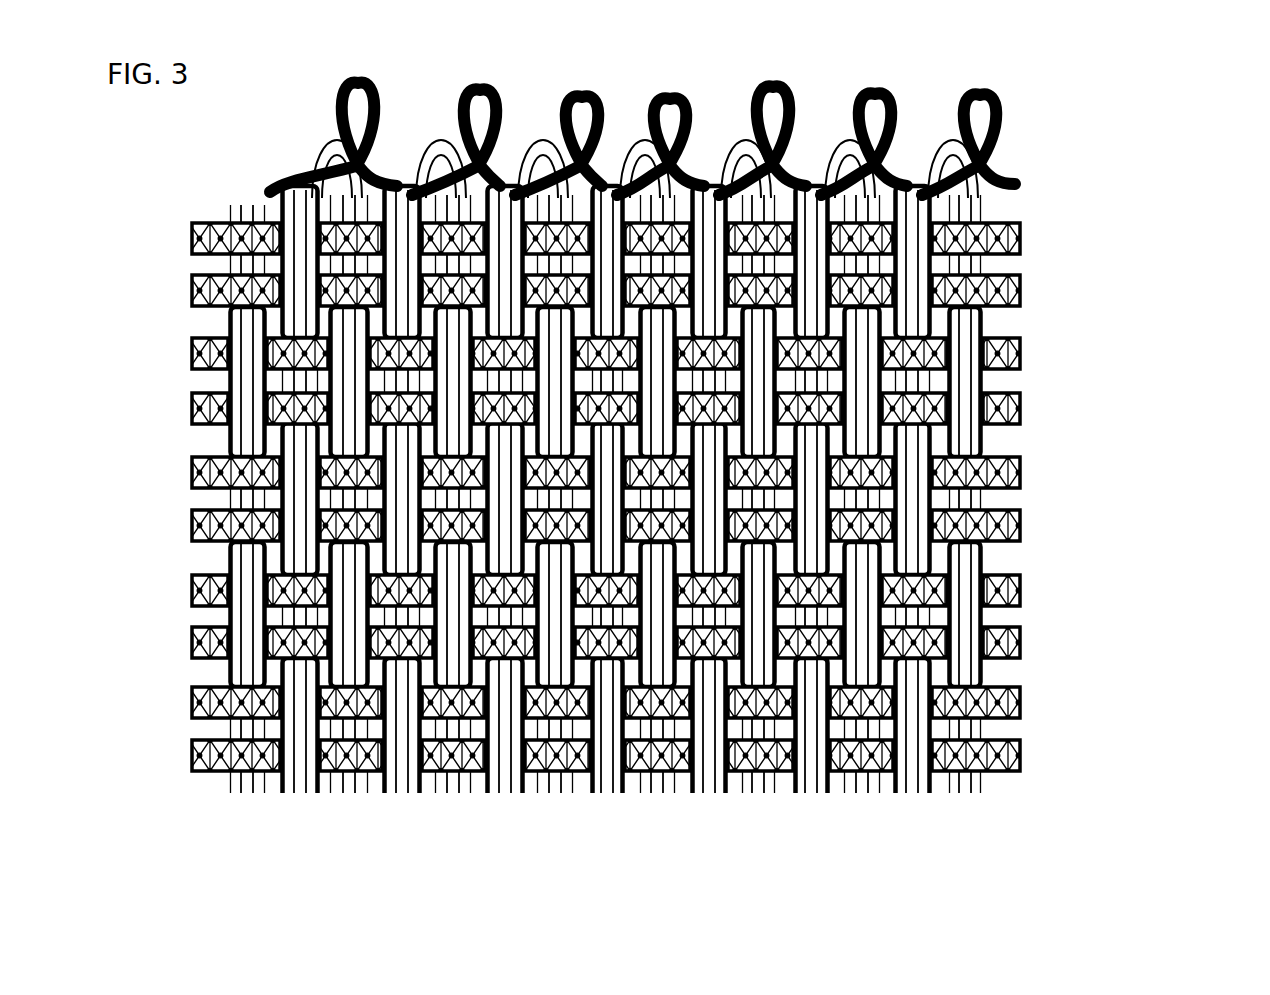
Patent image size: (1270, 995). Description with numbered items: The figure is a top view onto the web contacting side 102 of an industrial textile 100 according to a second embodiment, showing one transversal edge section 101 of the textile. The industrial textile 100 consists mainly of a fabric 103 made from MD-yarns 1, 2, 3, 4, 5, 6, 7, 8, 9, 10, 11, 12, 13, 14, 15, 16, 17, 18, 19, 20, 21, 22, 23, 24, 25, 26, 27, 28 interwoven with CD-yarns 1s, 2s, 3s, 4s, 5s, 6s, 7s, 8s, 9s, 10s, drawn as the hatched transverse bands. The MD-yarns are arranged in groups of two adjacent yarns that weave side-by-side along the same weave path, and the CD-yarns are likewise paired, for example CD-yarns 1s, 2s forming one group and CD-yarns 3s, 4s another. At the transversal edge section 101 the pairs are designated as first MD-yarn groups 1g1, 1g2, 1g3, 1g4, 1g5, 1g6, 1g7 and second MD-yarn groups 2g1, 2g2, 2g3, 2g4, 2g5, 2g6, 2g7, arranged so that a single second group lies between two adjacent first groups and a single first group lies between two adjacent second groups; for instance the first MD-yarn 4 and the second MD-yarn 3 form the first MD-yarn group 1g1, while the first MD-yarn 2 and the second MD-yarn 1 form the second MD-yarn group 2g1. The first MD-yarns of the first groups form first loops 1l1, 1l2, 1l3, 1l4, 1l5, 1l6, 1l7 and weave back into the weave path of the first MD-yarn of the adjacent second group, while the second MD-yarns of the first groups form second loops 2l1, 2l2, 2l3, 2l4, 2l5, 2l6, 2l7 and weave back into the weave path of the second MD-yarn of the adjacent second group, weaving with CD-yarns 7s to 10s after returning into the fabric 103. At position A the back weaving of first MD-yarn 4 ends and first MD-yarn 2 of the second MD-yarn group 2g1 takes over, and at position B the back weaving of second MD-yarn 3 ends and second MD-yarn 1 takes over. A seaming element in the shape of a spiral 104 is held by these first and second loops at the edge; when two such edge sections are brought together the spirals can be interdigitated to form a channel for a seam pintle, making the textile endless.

The CD-yarn 1s is at (190, 762).
The CD-yarn 2s is at (190, 704).
The CD-yarn 3s is at (190, 645).
The CD-yarn 4s is at (190, 592).
The CD-yarn 5s is at (190, 531).
The CD-yarn 6s is at (190, 477).
The CD-yarn 7s is at (190, 408).
The CD-yarn 8s is at (190, 357).
The CD-yarn 9s is at (190, 292).
The CD-yarn 10s is at (190, 250).
The second MD-yarn 1 is at (288, 796).
The first MD-yarn 2 is at (312, 796).
The second MD-yarn 3 is at (337, 796).
The first MD-yarn 4 is at (361, 796).
The MD-yarn 5 is at (390, 796).
The MD-yarn 6 is at (414, 796).
The MD-yarn 7 is at (441, 796).
The MD-yarn 8 is at (465, 796).
The MD-yarn 9 is at (493, 796).
The MD-yarn 10 is at (517, 796).
The MD-yarn 11 is at (543, 796).
The MD-yarn 12 is at (567, 796).
The MD-yarn 13 is at (595, 796).
The MD-yarn 14 is at (619, 796).
The MD-yarn 15 is at (645, 796).
The MD-yarn 16 is at (669, 796).
The MD-yarn 17 is at (697, 796).
The MD-yarn 18 is at (721, 796).
The MD-yarn 19 is at (746, 796).
The MD-yarn 20 is at (770, 796).
The MD-yarn 21 is at (799, 796).
The MD-yarn 22 is at (823, 796).
The MD-yarn 23 is at (850, 796).
The MD-yarn 24 is at (874, 796).
The MD-yarn 25 is at (900, 796).
The MD-yarn 26 is at (924, 796).
The MD-yarn 27 is at (953, 796).
The MD-yarn 28 is at (977, 796).
The first MD-yarn group 1g1 is at (324, 826).
The first MD-yarn group 1g2 is at (428, 826).
The first MD-yarn group 1g3 is at (530, 848).
The first MD-yarn group 1g4 is at (632, 848).
The first MD-yarn group 1g5 is at (733, 848).
The first MD-yarn group 1g6 is at (837, 848).
The first MD-yarn group 1g7 is at (940, 848).
The second MD-yarn group 2g1 is at (275, 826).
The second MD-yarn group 2g2 is at (377, 826).
The second MD-yarn group 2g3 is at (480, 826).
The second MD-yarn group 2g4 is at (582, 848).
The second MD-yarn group 2g5 is at (684, 848).
The second MD-yarn group 2g6 is at (786, 848).
The second MD-yarn group 2g7 is at (887, 848).
The first loop 1l1 is at (318, 150).
The first loop 1l2 is at (432, 148).
The first loop 1l3 is at (530, 150).
The first loop 1l4 is at (608, 168).
The first loop 1l5 is at (726, 150).
The first loop 1l6 is at (826, 152).
The first loop 1l7 is at (940, 165).
The second loop 2l1 is at (319, 137).
The second loop 2l2 is at (398, 160).
The second loop 2l3 is at (506, 175).
The second loop 2l4 is at (606, 168).
The second loop 2l5 is at (706, 158).
The second loop 2l6 is at (806, 165).
The second loop 2l7 is at (912, 162).
The industrial textile 100 is at (1181, 161).
The transversal edge section 101 is at (1024, 209).
The web contacting side 102 is at (1044, 393).
The fabric 103 is at (1079, 524).
The spiral 104 is at (1007, 122).
The position A is at (281, 442).
The position B is at (283, 400).